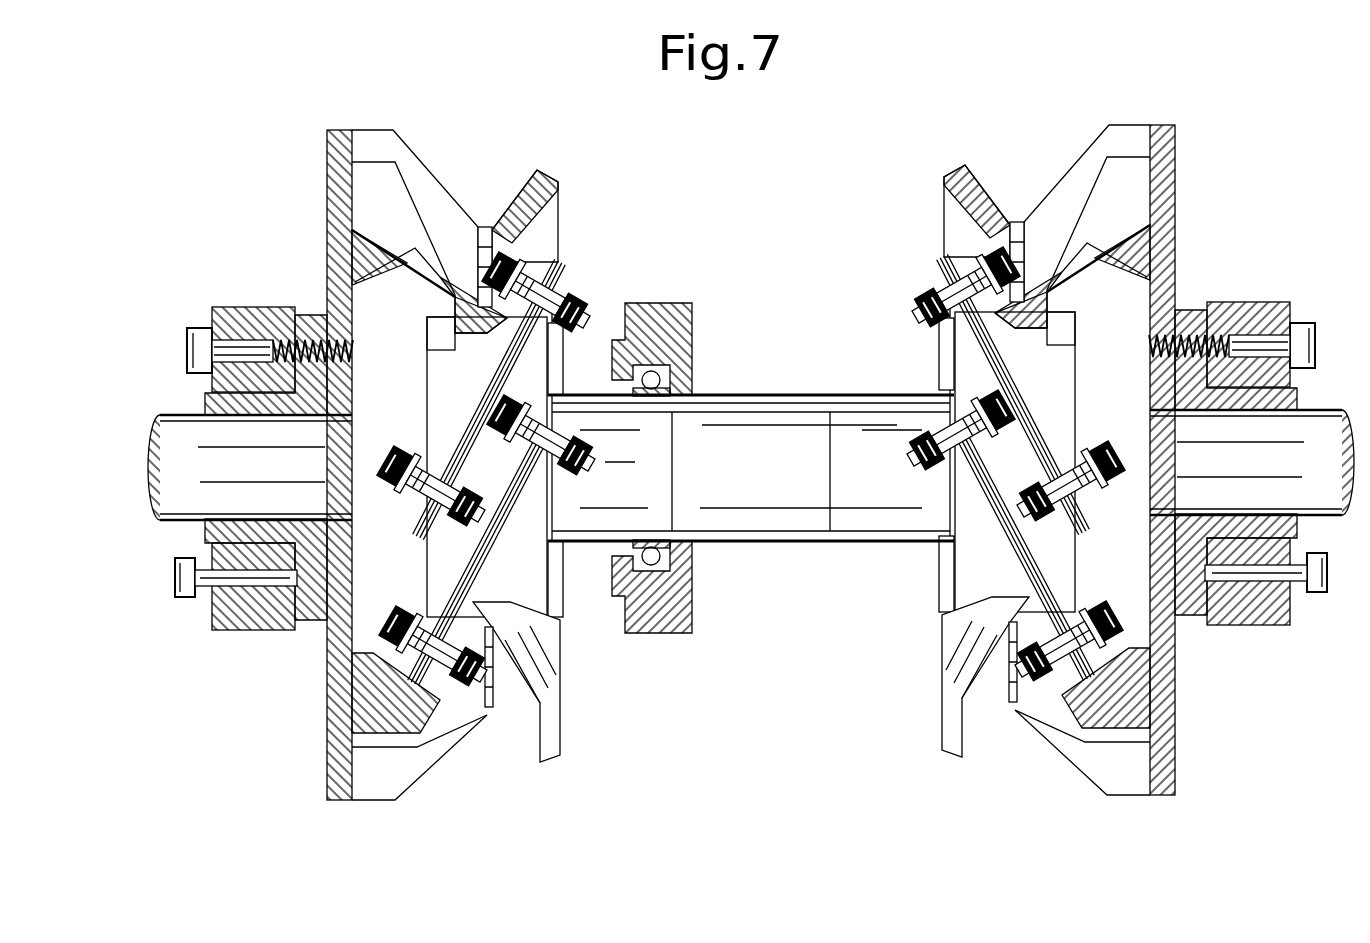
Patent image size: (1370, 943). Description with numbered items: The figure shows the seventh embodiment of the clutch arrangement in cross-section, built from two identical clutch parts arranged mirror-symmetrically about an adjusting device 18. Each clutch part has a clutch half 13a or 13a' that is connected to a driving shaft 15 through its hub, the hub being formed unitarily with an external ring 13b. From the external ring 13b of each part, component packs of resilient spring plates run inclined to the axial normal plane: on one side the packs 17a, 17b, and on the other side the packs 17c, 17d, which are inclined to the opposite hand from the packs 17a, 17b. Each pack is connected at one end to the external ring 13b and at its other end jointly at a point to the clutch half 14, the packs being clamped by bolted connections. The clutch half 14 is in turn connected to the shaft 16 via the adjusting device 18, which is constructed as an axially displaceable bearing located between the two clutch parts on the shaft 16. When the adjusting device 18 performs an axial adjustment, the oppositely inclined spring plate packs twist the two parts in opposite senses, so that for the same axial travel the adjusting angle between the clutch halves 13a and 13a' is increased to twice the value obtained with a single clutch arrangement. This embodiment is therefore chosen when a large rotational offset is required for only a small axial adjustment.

The clutch half 13a is at (1155, 433).
The clutch half 13a' is at (330, 475).
The external ring 13b is at (552, 755).
The clutch half 14 is at (212, 532).
The driving shaft 15 is at (198, 447).
The shaft 16 is at (765, 440).
The component pack of spring plates 17a is at (1008, 365).
The component pack of spring plates 17b is at (985, 503).
The component pack of spring plates 17c is at (500, 368).
The component pack of spring plates 17d is at (565, 667).
The adjusting device 18 is at (692, 630).